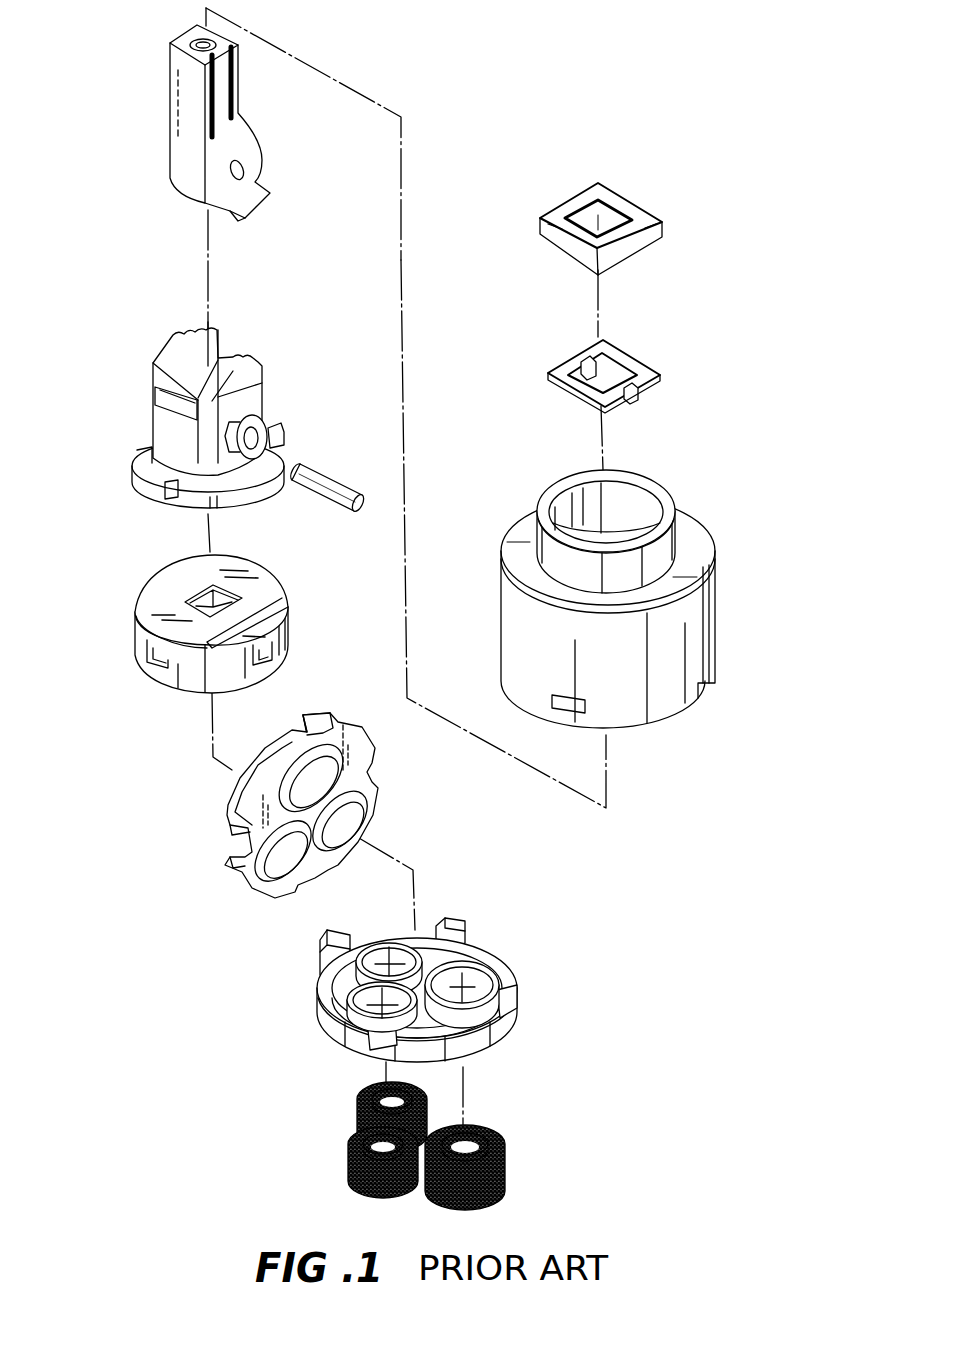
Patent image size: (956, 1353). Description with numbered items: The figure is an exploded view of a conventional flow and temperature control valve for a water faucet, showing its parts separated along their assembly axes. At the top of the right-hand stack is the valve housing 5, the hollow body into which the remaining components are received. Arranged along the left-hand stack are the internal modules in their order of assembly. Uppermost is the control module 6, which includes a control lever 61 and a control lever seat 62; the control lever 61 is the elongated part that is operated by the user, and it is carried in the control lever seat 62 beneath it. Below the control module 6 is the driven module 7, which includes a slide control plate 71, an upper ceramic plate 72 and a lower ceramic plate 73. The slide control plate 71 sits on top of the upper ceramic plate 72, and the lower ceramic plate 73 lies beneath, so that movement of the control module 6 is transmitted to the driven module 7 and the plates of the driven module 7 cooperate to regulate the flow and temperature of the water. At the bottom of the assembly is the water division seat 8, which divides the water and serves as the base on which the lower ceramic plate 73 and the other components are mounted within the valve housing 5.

The valve housing 5 is at (501, 445).
The control module 6 is at (145, 268).
The control lever 61 is at (182, 103).
The control lever seat 62 is at (175, 438).
The driven module 7 is at (136, 806).
The slide control plate 71 is at (173, 600).
The upper ceramic plate 72 is at (181, 683).
The lower ceramic plate 73 is at (236, 790).
The water division seat 8 is at (487, 940).